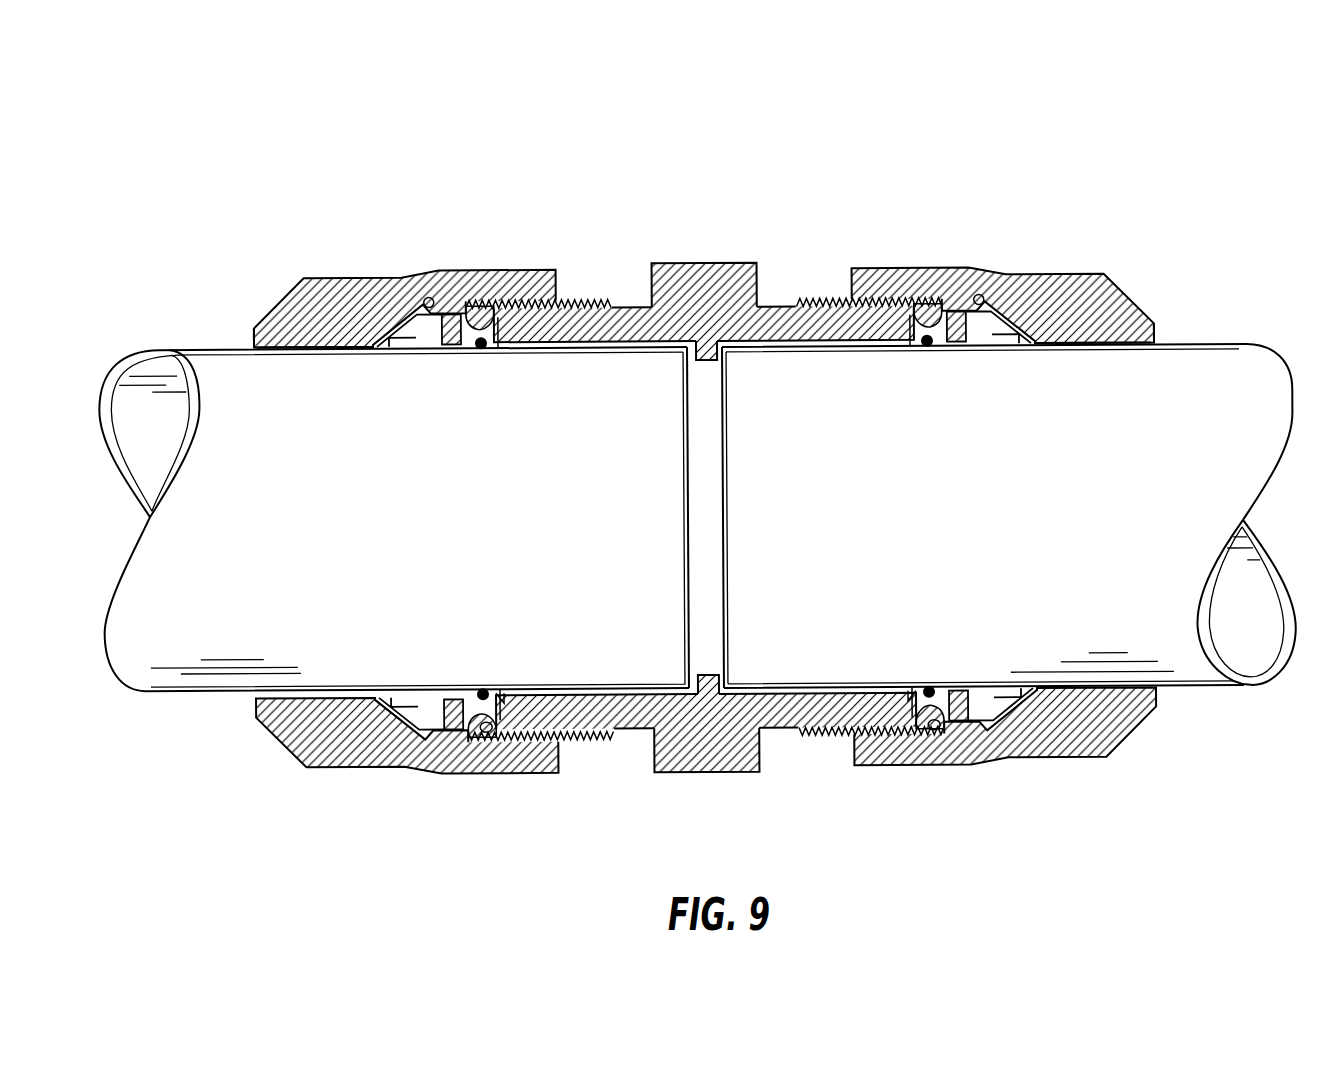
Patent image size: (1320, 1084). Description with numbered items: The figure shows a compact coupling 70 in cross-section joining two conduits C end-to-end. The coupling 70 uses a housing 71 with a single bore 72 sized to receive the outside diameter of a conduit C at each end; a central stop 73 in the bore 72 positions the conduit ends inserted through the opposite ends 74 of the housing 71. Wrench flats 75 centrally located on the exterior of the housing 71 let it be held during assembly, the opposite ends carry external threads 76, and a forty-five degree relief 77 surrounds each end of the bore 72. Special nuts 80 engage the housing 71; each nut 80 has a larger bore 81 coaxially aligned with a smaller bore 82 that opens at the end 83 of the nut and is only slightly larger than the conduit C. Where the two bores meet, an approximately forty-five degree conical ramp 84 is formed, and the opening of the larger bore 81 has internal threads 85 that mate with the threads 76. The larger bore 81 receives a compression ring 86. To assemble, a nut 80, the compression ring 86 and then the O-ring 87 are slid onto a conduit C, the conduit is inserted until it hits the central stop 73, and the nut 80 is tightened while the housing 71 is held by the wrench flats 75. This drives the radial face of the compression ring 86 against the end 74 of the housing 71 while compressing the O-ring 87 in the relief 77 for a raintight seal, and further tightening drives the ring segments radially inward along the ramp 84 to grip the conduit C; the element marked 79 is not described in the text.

The coupling 70 is at (698, 434).
The housing 71 is at (706, 750).
The bore 72 is at (705, 517).
The central stop 73 is at (707, 517).
The end of the housing 74 is at (705, 521).
The wrench flats 75 is at (704, 285).
The external threads 76 is at (705, 519).
The 45 degree relief 77 is at (705, 517).
The seal 79 is at (706, 697).
The nut 80 is at (705, 520).
The larger bore 81 is at (704, 300).
The smaller bore 82 is at (704, 344).
The end of the nut 83 is at (704, 335).
The conical ramp 84 is at (705, 520).
The internal threads 85 is at (710, 726).
The compression ring 86 is at (705, 520).
The O-ring 87 is at (705, 518).
The conduit C is at (425, 540).